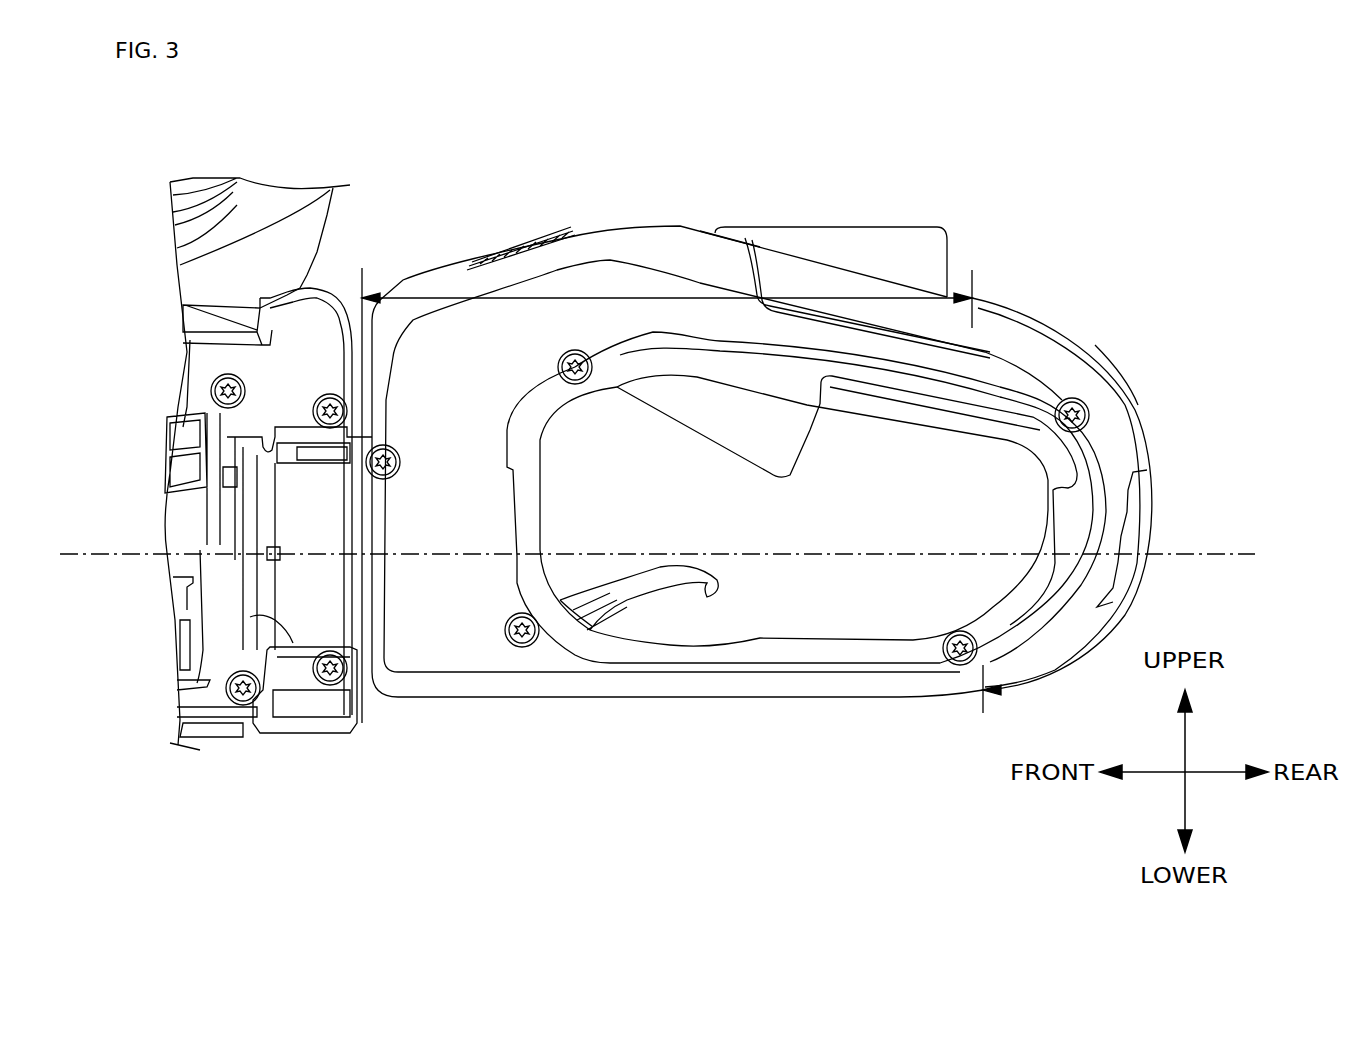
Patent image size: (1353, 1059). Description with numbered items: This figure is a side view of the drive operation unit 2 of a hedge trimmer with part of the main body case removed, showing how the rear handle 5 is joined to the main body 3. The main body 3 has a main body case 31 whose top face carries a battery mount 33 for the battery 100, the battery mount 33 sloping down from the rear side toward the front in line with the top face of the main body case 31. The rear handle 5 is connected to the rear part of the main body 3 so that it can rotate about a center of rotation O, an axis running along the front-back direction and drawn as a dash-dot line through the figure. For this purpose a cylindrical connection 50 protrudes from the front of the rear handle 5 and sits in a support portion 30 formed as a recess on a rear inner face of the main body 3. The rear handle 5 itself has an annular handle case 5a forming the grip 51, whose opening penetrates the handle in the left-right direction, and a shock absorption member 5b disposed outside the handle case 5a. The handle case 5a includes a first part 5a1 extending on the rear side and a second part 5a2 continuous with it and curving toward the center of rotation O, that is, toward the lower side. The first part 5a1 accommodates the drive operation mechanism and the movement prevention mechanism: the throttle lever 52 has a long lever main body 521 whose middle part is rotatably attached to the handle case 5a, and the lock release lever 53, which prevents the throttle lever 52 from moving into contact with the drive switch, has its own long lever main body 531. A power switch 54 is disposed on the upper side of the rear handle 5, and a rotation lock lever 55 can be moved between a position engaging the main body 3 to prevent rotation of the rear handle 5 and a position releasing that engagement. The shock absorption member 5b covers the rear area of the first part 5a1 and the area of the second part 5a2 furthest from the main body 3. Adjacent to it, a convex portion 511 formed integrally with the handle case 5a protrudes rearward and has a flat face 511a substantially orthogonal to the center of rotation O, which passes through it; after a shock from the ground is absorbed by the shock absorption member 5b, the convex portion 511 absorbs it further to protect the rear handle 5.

The drive operation unit 2 is at (776, 165).
The main body 3 is at (340, 278).
The rear handle 5 is at (1062, 303).
The handle case 5a is at (775, 690).
The first part 5a1 is at (680, 300).
The second part 5a2 is at (1123, 388).
The shock absorption member 5b is at (1140, 470).
The support portion 30 is at (253, 620).
The main body case 31 is at (257, 737).
The battery mount 33 is at (190, 275).
The connection 50 is at (310, 600).
The grip 51 is at (630, 237).
The throttle lever 52 is at (805, 470).
The lock release lever 53 is at (887, 212).
The power switch 54 is at (530, 247).
The rotation lock lever 55 is at (610, 657).
The battery 100 is at (273, 208).
The convex portion 511 is at (1097, 597).
The flat face 511a is at (1120, 587).
The lever main body 521 is at (720, 420).
The lever main body 531 is at (930, 256).
The center of rotation O is at (102, 553).